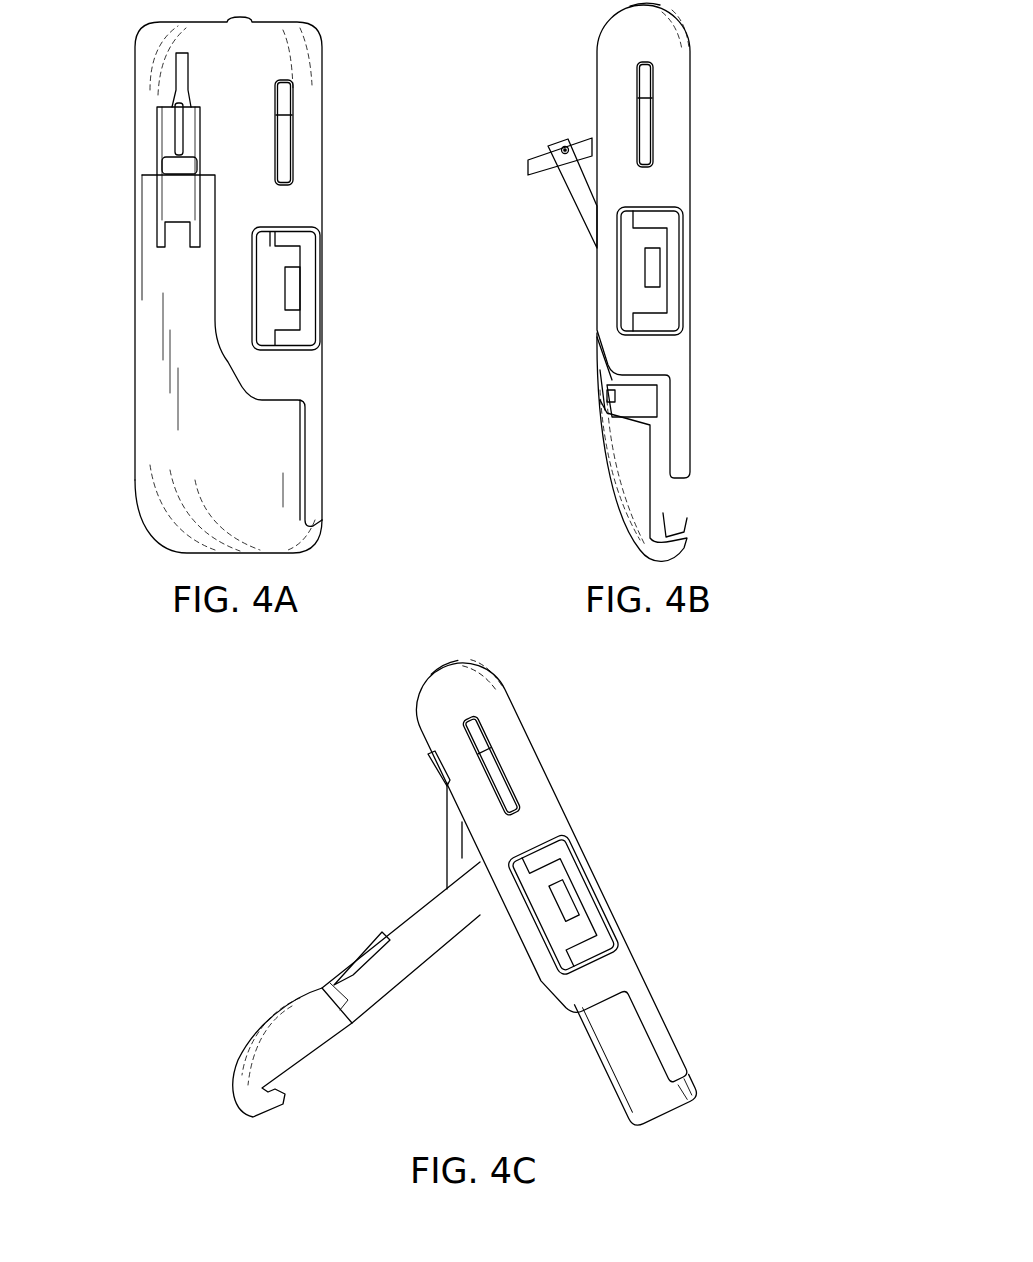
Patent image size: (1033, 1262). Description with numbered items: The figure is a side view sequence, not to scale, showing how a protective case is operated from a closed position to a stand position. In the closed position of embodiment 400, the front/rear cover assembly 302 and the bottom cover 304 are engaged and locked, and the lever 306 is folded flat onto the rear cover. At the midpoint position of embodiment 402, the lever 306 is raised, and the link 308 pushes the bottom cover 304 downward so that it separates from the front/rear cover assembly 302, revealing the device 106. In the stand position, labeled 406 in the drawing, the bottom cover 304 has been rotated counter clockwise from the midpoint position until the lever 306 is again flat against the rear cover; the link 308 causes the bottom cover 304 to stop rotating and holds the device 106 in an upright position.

In FIG. 4B, the device 106 is at (687, 508).
In FIG. 4C, the device 106 is at (613, 1073).
In FIG. 4A, the front/rear cover assembly 302 is at (323, 125).
In FIG. 4B, the front/rear cover assembly 302 is at (552, 303).
In FIG. 4C, the front/rear cover assembly 302 is at (423, 722).
In FIG. 4A, the bottom cover 304 is at (136, 494).
In FIG. 4B, the bottom cover 304 is at (597, 492).
In FIG. 4C, the bottom cover 304 is at (272, 1003).
In FIG. 4A, the lever 306 is at (158, 140).
In FIG. 4B, the lever 306 is at (535, 152).
In FIG. 4C, the lever 306 is at (428, 772).
In FIG. 4B, the link 308 is at (582, 211).
In FIG. 4C, the link 308 is at (446, 860).
In FIG. 4A, the embodiment in closed position 400 is at (346, 418).
In FIG. 4B, the embodiment in midpoint position 402 is at (721, 134).
In FIG. 4C, the stand position 406 is at (586, 739).